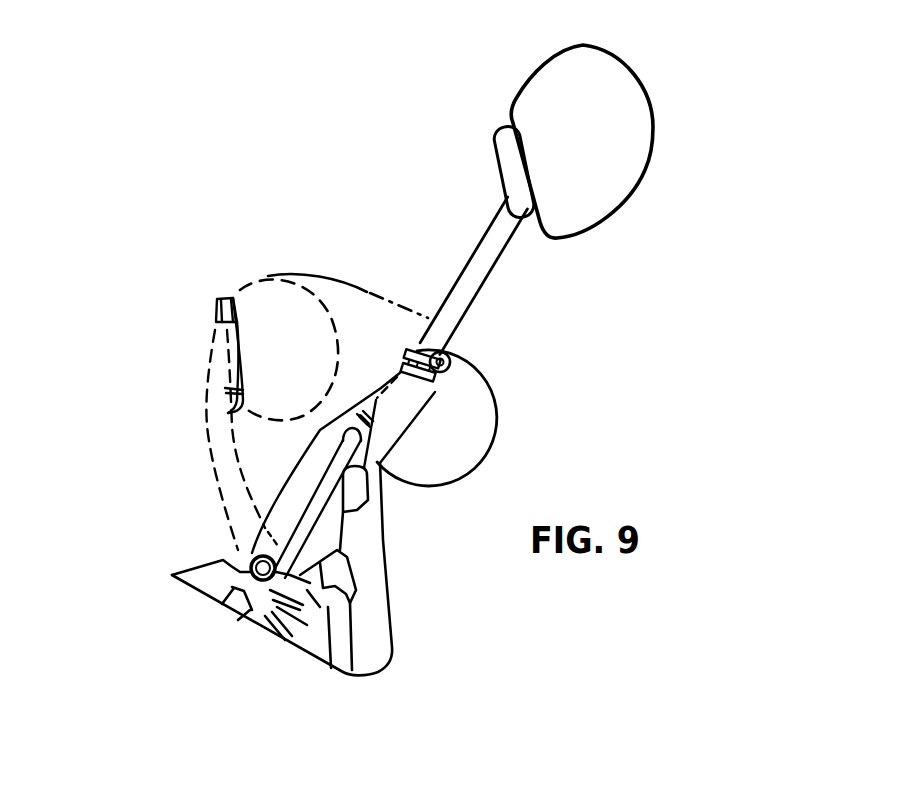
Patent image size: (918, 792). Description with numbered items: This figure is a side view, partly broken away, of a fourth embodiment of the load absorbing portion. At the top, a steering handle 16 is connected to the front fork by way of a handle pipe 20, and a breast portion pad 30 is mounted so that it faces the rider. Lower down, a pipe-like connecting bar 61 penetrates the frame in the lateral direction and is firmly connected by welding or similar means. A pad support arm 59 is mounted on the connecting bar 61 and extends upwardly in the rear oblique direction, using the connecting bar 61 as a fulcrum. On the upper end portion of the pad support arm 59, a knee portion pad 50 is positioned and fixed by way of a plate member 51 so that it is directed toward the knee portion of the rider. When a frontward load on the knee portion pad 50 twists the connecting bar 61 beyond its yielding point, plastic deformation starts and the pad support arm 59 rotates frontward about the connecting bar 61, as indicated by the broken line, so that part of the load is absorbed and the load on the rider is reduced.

The steering handle 16 is at (494, 172).
The handle pipe 20 is at (487, 270).
The breast portion pad 30 is at (655, 130).
The knee portion pad 50 is at (270, 293).
The plate member 51 is at (215, 342).
The pad support arm 59 is at (298, 496).
The connecting bar 61 is at (252, 556).